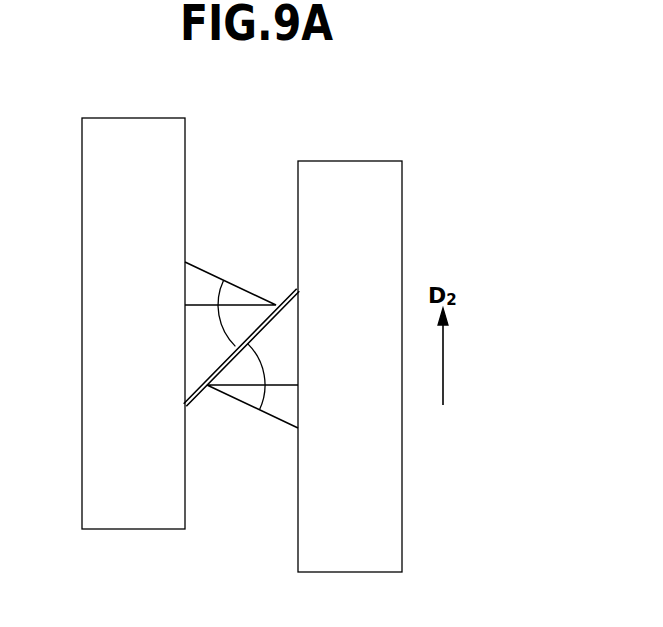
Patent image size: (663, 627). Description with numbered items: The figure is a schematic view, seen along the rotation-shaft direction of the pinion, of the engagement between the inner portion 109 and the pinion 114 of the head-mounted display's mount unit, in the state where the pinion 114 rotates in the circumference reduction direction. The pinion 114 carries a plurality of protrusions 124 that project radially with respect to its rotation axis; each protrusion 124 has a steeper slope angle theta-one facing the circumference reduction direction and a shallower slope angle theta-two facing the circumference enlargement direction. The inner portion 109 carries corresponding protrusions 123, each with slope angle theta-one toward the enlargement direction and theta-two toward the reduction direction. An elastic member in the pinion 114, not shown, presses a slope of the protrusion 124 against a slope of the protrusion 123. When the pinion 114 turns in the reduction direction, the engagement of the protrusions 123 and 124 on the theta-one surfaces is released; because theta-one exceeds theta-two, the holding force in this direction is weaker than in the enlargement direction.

The inner portion 109 is at (131, 118).
The pinion 114 is at (350, 161).
The protrusion 123 is at (252, 294).
The protrusion 124 is at (233, 398).